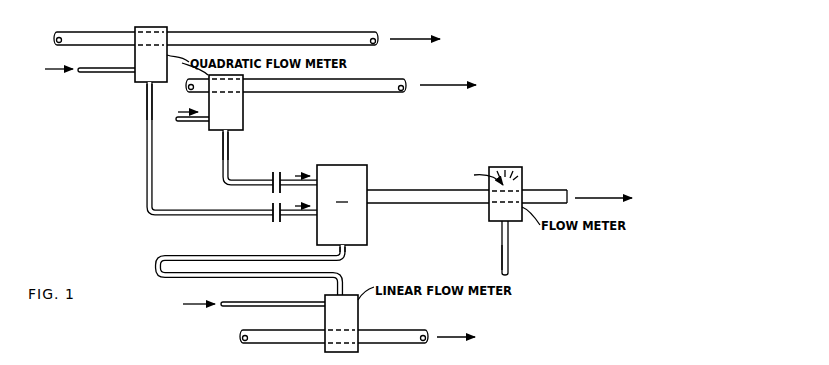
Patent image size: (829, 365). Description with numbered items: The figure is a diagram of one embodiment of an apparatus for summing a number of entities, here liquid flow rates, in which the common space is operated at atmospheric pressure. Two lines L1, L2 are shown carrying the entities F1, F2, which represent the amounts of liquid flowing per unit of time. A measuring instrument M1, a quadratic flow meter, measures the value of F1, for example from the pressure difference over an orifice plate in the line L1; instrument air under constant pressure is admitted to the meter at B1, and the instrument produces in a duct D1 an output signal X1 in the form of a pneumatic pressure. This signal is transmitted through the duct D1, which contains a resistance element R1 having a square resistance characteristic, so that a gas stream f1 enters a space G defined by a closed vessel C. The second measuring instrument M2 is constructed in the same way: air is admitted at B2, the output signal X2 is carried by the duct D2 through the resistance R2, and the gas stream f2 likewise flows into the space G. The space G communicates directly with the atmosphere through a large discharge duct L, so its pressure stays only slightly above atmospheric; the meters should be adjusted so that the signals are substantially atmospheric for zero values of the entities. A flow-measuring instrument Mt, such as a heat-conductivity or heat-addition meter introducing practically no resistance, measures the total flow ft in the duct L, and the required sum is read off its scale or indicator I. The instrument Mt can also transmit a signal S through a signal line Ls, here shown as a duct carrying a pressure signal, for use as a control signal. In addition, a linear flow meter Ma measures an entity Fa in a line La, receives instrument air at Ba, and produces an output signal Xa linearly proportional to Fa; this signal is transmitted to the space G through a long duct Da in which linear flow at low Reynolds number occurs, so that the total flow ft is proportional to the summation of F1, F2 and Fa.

The measuring instrument M1 is at (141, 27).
The line L1 is at (266, 14).
The entity F1 is at (412, 38).
The instrument air admission point B1 is at (100, 74).
The output signal X1 is at (141, 102).
The duct D1 is at (146, 140).
The measuring instrument M2 is at (243, 104).
The line L2 is at (311, 93).
The entity F2 is at (446, 85).
The instrument air admission point B2 is at (197, 122).
The output signal X2 is at (240, 146).
The duct D2 is at (222, 170).
The resistance R2 is at (271, 167).
The gas stream f2 is at (285, 178).
The resistance element R1 is at (271, 205).
The gas stream f1 is at (287, 218).
The closed vessel C is at (342, 197).
The space G is at (342, 194).
The discharge duct L is at (392, 192).
The indicator I is at (490, 177).
The flow-measuring instrument Mt is at (489, 215).
The total flow ft is at (606, 196).
The signal S is at (513, 248).
The signal line Ls is at (502, 265).
The duct Da is at (199, 256).
The output signal Xa is at (354, 262).
The instrument air admission point Ba is at (232, 307).
The measuring instrument Ma is at (325, 318).
The line La is at (402, 330).
The entity Fa is at (465, 336).